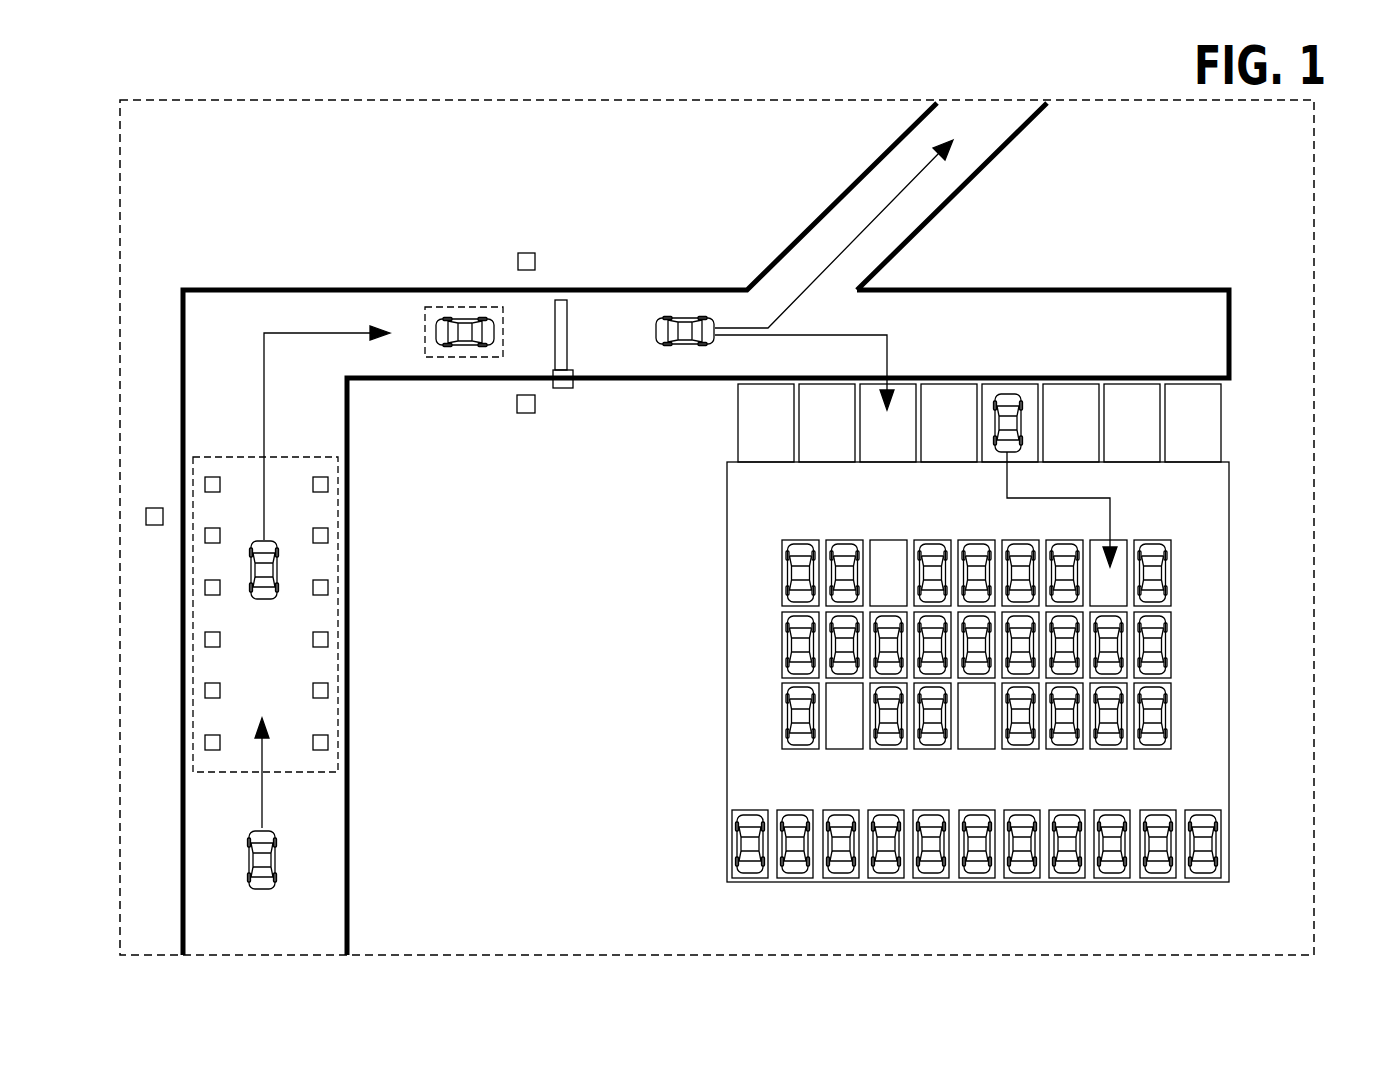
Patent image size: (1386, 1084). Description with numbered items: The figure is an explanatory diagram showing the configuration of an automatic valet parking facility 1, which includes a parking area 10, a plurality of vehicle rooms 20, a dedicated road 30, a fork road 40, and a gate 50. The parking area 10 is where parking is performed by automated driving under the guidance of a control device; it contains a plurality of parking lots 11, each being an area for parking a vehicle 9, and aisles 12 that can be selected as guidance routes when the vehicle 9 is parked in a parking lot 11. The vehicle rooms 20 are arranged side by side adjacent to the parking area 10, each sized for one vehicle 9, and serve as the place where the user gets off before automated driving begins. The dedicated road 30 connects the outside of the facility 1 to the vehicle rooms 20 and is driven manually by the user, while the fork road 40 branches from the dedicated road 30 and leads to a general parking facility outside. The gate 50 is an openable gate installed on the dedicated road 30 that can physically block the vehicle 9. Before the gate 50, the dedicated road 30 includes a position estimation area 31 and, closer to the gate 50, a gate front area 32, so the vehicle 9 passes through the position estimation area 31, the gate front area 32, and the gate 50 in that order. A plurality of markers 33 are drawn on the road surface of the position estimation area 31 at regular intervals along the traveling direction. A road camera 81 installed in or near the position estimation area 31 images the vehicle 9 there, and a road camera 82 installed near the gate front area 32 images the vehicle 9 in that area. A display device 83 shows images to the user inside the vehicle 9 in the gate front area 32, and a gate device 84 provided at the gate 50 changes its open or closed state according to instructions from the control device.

The automatic valet parking facility 1 is at (223, 102).
The vehicle 9 is at (277, 858).
The parking area 10 is at (1051, 667).
The parking lot 11 is at (1172, 718).
The aisle 12 is at (1200, 597).
The vehicle room 20 is at (1219, 423).
The dedicated road 30 is at (1231, 334).
The position estimation area 31 is at (319, 577).
The gate front area 32 is at (447, 305).
The markers 33 is at (328, 638).
The fork road 40 is at (1033, 115).
The gate 50 is at (567, 310).
The road camera 81 is at (146, 514).
The road camera 82 is at (522, 252).
The display device 83 is at (520, 413).
The gate device 84 is at (560, 388).